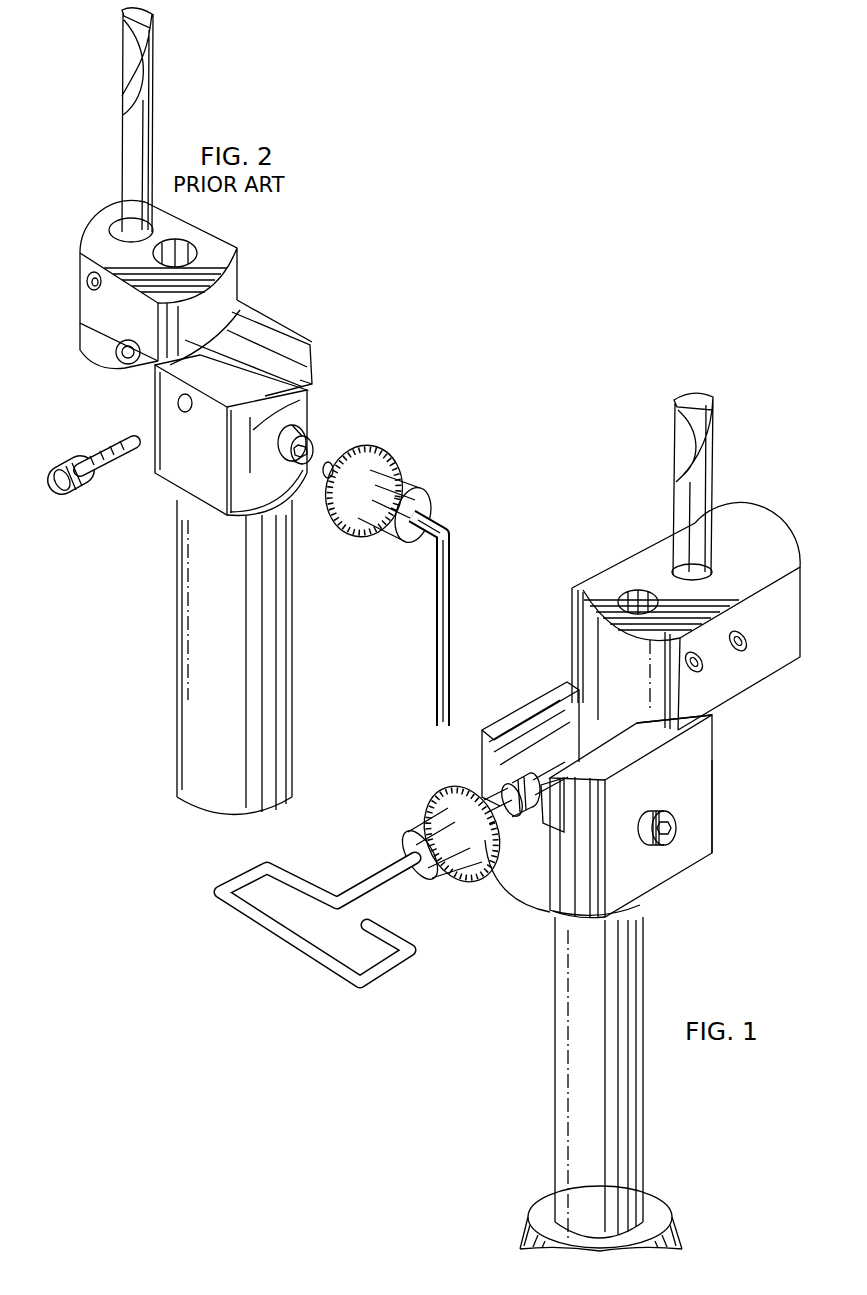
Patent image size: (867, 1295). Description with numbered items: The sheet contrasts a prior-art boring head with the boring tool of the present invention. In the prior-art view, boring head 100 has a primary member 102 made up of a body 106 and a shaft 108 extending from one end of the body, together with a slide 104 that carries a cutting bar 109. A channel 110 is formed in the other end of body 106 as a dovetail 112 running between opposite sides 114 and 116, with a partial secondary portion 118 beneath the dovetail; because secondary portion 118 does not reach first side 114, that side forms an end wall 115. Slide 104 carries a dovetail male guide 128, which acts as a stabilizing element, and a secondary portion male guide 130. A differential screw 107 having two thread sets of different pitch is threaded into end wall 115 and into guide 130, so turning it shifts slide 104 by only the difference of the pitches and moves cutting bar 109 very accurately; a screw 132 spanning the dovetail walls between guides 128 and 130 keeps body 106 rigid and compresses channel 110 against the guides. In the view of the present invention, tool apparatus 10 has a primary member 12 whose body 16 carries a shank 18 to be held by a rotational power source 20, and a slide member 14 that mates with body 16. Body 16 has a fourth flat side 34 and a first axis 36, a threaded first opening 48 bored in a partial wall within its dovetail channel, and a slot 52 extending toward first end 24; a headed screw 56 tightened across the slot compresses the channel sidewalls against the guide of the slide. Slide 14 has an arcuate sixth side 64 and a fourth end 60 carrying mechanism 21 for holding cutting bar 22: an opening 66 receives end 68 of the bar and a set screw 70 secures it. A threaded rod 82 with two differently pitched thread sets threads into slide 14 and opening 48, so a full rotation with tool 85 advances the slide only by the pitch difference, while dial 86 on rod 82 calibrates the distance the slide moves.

In FIG. 1, the tool apparatus 10 is at (463, 1014).
In FIG. 1, the primary member 12 is at (716, 850).
In FIG. 1, the slide member 14 is at (752, 697).
In FIG. 1, the body 16 is at (624, 832).
In FIG. 1, the shank 18 is at (567, 1028).
In FIG. 1, the rotational power source 20 is at (601, 1198).
In FIG. 1, the mechanism for holding cutting bar 21 is at (664, 613).
In FIG. 1, the cutting bar 22 is at (716, 455).
In FIG. 1, the first end 24 is at (538, 910).
In FIG. 1, the fourth flat side 34 is at (697, 748).
In FIG. 1, the first axis 36 is at (525, 893).
In FIG. 1, the first opening 48 is at (535, 768).
In FIG. 1, the slot 52 is at (500, 885).
In FIG. 1, the headed screw 56 is at (662, 810).
In FIG. 1, the fourth end 60 is at (725, 528).
In FIG. 1, the sixth side 64 is at (578, 615).
In FIG. 1, the opening 66 is at (638, 600).
In FIG. 1, the end of cutting bar 68 is at (712, 572).
In FIG. 1, the set screw 70 is at (745, 636).
In FIG. 1, the threaded rod 82 is at (500, 790).
In FIG. 1, the tool 85 is at (290, 953).
In FIG. 1, the dial 86 is at (433, 803).
In FIG. 2, the boring head 100 is at (126, 585).
In FIG. 2, the primary member 102 is at (176, 638).
In FIG. 2, the slide 104 is at (210, 242).
In FIG. 2, the body 106 is at (170, 493).
In FIG. 2, the differential screw 107 is at (280, 492).
In FIG. 2, the shaft 108 is at (180, 752).
In FIG. 2, the cutting bar 109 is at (122, 137).
In FIG. 2, the channel 110 is at (310, 424).
In FIG. 2, the dovetail 112 is at (290, 405).
In FIG. 2, the first side 114 is at (313, 449).
In FIG. 2, the end wall 115 is at (260, 475).
In FIG. 2, the second side 116 is at (156, 398).
In FIG. 2, the secondary portion 118 is at (240, 352).
In FIG. 2, the dovetail male guide 128 is at (237, 342).
In FIG. 2, the secondary portion male guide 130 is at (96, 360).
In FIG. 2, the screw 132 is at (302, 388).